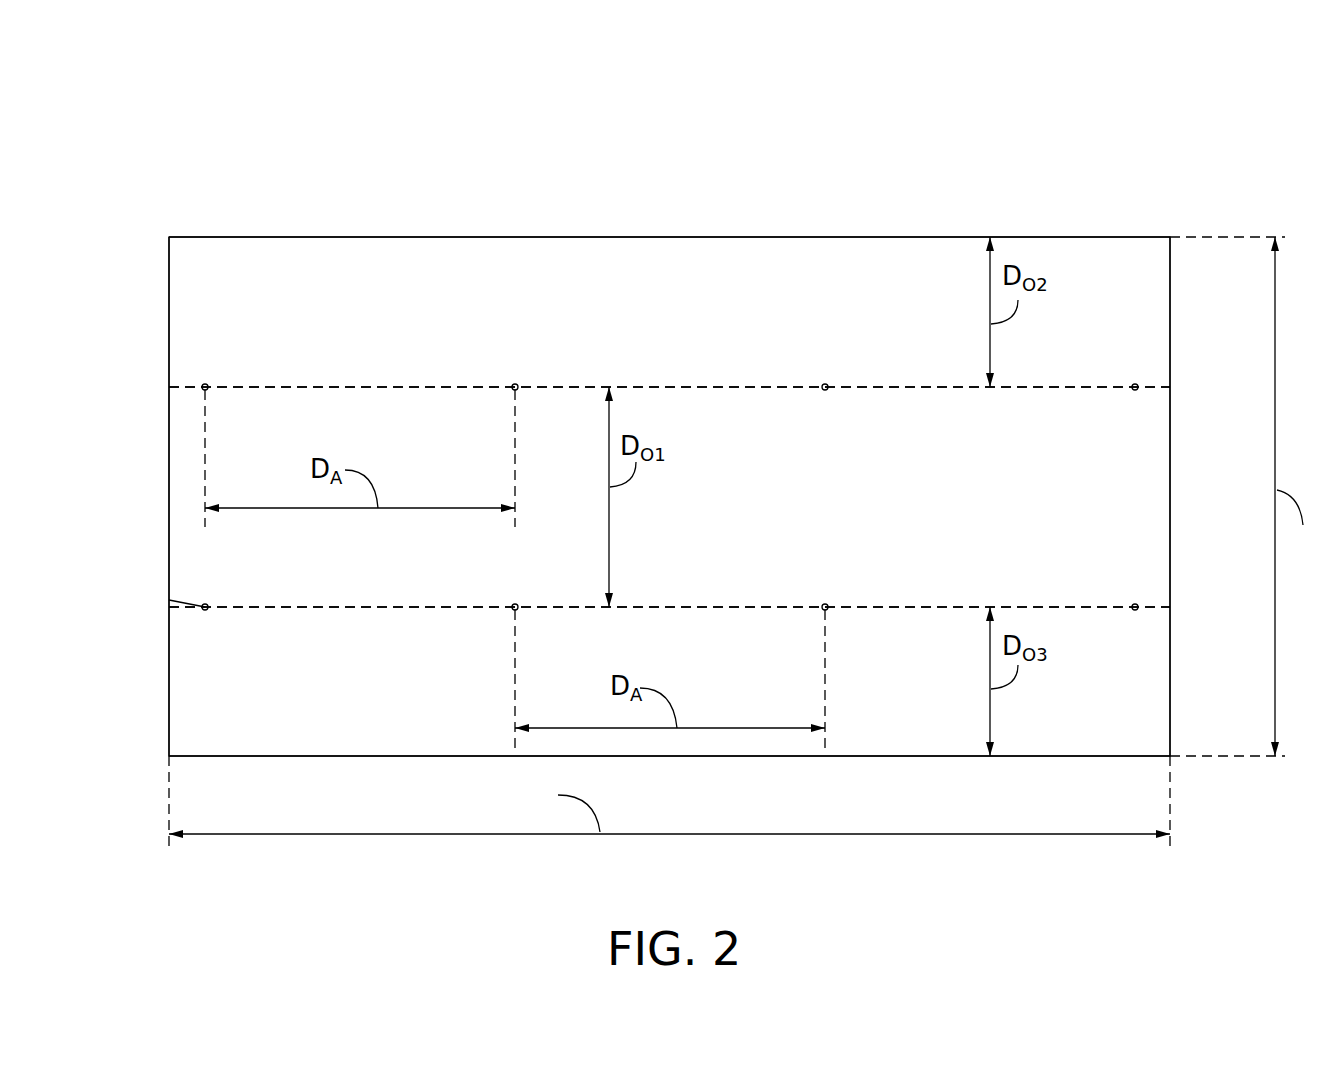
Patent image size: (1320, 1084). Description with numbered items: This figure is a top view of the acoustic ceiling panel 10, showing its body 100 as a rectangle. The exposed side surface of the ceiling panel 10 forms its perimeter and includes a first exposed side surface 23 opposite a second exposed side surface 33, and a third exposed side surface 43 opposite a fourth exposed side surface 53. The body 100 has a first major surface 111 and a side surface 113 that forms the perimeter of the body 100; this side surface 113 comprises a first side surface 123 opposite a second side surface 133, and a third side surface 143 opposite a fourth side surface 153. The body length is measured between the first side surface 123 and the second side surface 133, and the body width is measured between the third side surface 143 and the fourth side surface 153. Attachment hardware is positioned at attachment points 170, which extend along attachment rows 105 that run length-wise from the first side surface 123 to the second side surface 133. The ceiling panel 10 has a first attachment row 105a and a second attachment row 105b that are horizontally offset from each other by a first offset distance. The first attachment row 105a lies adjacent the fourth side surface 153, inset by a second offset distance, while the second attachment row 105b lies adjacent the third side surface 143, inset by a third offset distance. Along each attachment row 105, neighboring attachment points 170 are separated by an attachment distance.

The ceiling panel 10 is at (1238, 146).
The body 100 is at (325, 243).
The attachment row 105 is at (855, 362).
The first attachment row 105a is at (474, 387).
The second attachment row 105b is at (292, 607).
The attachment point 170 is at (205, 392).
The side surface 113 is at (168, 262).
The second side surface 133 is at (168, 455).
The first major surface 111 is at (183, 605).
The second exposed side surface 33 is at (168, 690).
The third exposed side surface 43 is at (220, 757).
The third side surface 143 is at (789, 757).
The fourth exposed side surface 53 is at (500, 237).
The fourth side surface 153 is at (697, 237).
The first side surface 123 is at (1172, 458).
The first exposed side surface 23 is at (1172, 525).